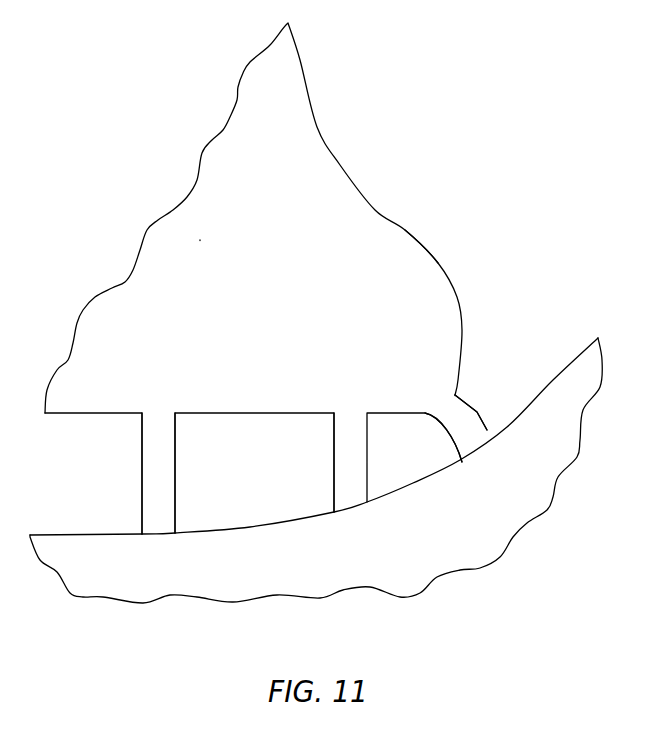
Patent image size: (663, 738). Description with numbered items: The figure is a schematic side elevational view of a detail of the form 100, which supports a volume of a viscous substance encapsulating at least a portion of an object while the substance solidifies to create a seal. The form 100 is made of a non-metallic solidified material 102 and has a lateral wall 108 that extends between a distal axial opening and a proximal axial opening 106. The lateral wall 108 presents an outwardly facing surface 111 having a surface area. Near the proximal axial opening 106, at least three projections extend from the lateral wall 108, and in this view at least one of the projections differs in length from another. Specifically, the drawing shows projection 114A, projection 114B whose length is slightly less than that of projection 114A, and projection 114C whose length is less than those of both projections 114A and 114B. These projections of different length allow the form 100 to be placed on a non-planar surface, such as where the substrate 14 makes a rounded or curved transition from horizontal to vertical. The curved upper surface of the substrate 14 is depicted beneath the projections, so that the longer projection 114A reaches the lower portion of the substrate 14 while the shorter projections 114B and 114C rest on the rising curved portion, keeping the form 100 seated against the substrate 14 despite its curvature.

The form 100 is at (432, 128).
The non-metallic solidified material 102 is at (317, 127).
The lateral wall 108 is at (373, 195).
The outwardly facing surface 111 is at (268, 282).
The proximal axial opening 106 is at (233, 431).
The projection 114A is at (142, 500).
The projection 114B is at (367, 470).
The projection 114C is at (477, 412).
The substrate 14 is at (400, 551).